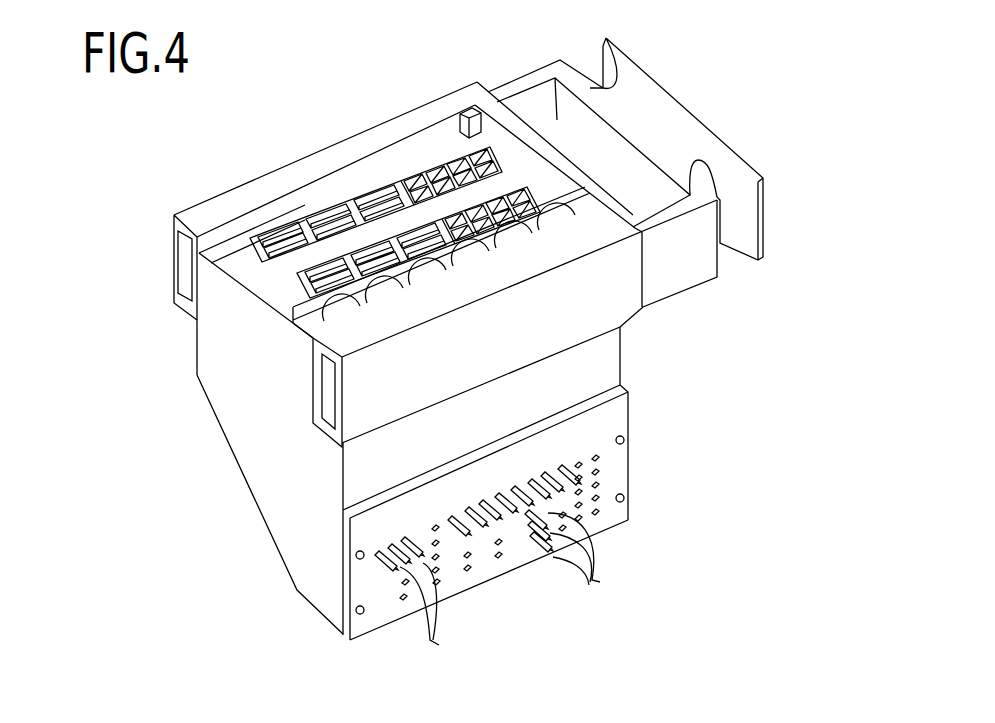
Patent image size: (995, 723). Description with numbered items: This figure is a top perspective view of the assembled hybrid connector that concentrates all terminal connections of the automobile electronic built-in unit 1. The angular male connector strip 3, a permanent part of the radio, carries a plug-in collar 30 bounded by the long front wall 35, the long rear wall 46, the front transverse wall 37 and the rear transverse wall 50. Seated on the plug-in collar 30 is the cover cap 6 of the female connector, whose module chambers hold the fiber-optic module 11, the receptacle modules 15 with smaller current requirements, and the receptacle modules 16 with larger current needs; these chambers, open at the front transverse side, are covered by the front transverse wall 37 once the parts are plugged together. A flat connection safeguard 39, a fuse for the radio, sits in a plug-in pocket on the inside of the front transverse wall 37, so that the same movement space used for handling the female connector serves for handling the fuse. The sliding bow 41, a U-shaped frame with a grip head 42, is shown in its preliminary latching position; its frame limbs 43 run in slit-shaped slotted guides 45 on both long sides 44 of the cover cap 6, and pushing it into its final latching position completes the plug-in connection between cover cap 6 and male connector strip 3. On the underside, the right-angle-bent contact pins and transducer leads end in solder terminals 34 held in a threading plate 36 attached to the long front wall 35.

The electronic built-in unit 1 is at (157, 188).
The angular male connector strip 3 is at (240, 522).
The cover cap 6 is at (297, 152).
The fiber-optic module 11 is at (310, 347).
The receptacle module 15 is at (478, 211).
The receptacle module 16 is at (407, 250).
The plug-in collar 30 is at (233, 361).
The solder terminals 34 is at (501, 563).
The long front wall 35 is at (597, 360).
The threading plate 36 is at (610, 472).
The front transverse wall 37 is at (230, 392).
The flat connection safeguard 39 is at (243, 243).
The sliding bow 41 is at (640, 57).
The grip head 42 is at (668, 112).
The frame limbs 43 is at (520, 78).
The long sides 44 is at (173, 252).
The slotted guides 45 is at (185, 275).
The long rear wall 46 is at (197, 350).
The rear transverse wall 50 is at (620, 337).